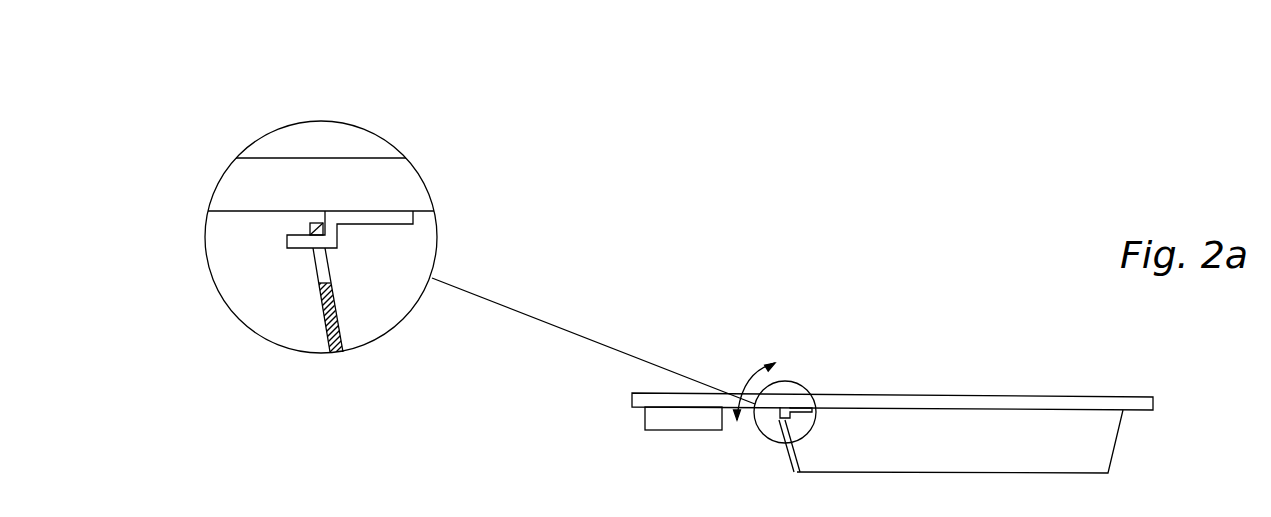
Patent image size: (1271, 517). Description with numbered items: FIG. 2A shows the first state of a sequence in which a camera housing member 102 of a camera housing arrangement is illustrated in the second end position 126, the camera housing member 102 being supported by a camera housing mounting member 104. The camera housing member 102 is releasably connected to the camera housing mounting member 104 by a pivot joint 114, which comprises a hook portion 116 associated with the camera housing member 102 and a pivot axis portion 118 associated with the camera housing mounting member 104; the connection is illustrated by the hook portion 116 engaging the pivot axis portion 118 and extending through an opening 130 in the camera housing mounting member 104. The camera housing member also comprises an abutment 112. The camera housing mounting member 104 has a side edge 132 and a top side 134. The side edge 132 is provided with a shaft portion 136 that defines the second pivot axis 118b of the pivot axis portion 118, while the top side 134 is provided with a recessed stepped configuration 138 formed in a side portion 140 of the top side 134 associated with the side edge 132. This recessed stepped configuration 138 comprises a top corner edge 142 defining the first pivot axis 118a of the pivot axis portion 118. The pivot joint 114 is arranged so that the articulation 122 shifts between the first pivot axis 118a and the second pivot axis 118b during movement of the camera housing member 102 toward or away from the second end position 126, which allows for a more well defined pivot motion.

The camera housing member 102 is at (397, 168).
The camera housing mounting member 104 is at (357, 327).
The abutment 112 is at (668, 421).
The pivot joint 114 is at (368, 278).
The hook portion 116 is at (286, 240).
The pivot axis portion 118 is at (392, 240).
The first pivot axis 118a is at (418, 215).
The second pivot axis 118b is at (313, 224).
The articulation 122 is at (743, 378).
The second end position 126 is at (377, 181).
The opening 130 is at (320, 272).
The side edge 132 is at (317, 328).
The top side 134 is at (405, 197).
The shaft portion 136 is at (308, 212).
The recessed stepped configuration 138 is at (362, 210).
The side portion 140 is at (343, 211).
The top corner edge 142 is at (430, 225).